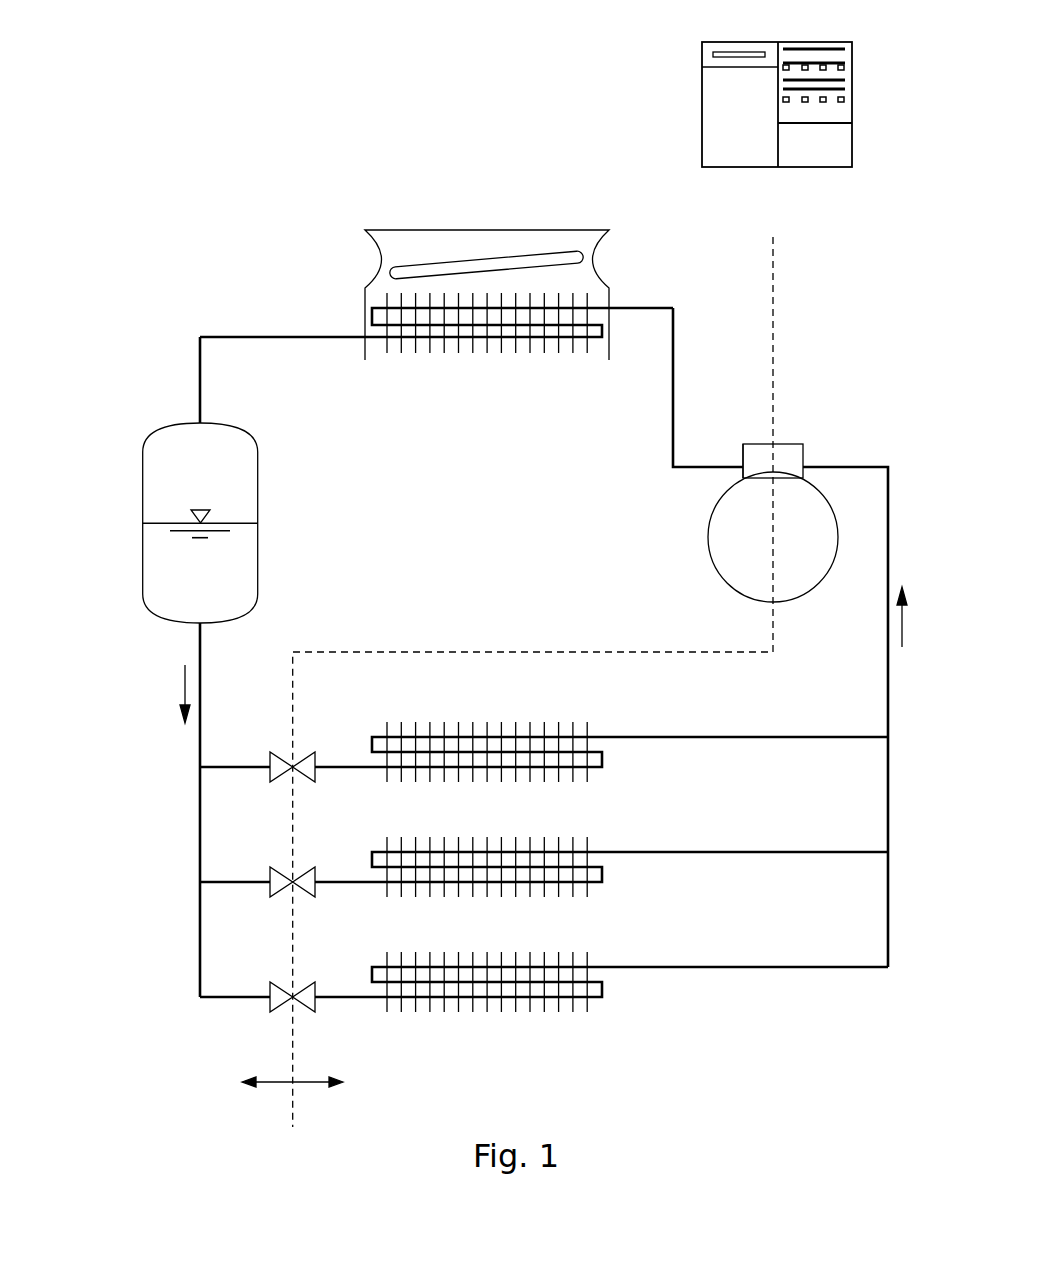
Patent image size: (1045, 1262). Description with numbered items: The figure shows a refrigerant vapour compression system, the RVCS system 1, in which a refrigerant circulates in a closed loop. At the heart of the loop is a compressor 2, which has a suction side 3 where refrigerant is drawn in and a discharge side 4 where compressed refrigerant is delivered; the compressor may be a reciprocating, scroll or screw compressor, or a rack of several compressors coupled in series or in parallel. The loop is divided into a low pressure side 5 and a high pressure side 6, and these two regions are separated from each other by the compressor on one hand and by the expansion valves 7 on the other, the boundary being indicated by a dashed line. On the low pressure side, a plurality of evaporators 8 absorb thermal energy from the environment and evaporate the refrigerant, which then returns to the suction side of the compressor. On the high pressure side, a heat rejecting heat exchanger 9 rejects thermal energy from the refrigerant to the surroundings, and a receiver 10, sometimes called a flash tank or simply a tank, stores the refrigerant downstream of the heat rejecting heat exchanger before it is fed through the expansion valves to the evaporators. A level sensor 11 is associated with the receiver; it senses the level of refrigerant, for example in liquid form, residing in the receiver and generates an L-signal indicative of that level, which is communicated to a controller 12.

The RVCS system 1 is at (260, 103).
The compressor 2 is at (718, 526).
The suction side 3 is at (798, 446).
The discharge side 4 is at (737, 446).
The low pressure side 5 is at (387, 1074).
The high pressure side 6 is at (180, 1074).
The expansion valve 7 is at (266, 737).
The evaporator 8 is at (577, 755).
The heat rejecting heat exchanger 9 is at (436, 309).
The receiver 10 is at (252, 498).
The level sensor 11 is at (203, 498).
The controller 12 is at (703, 104).